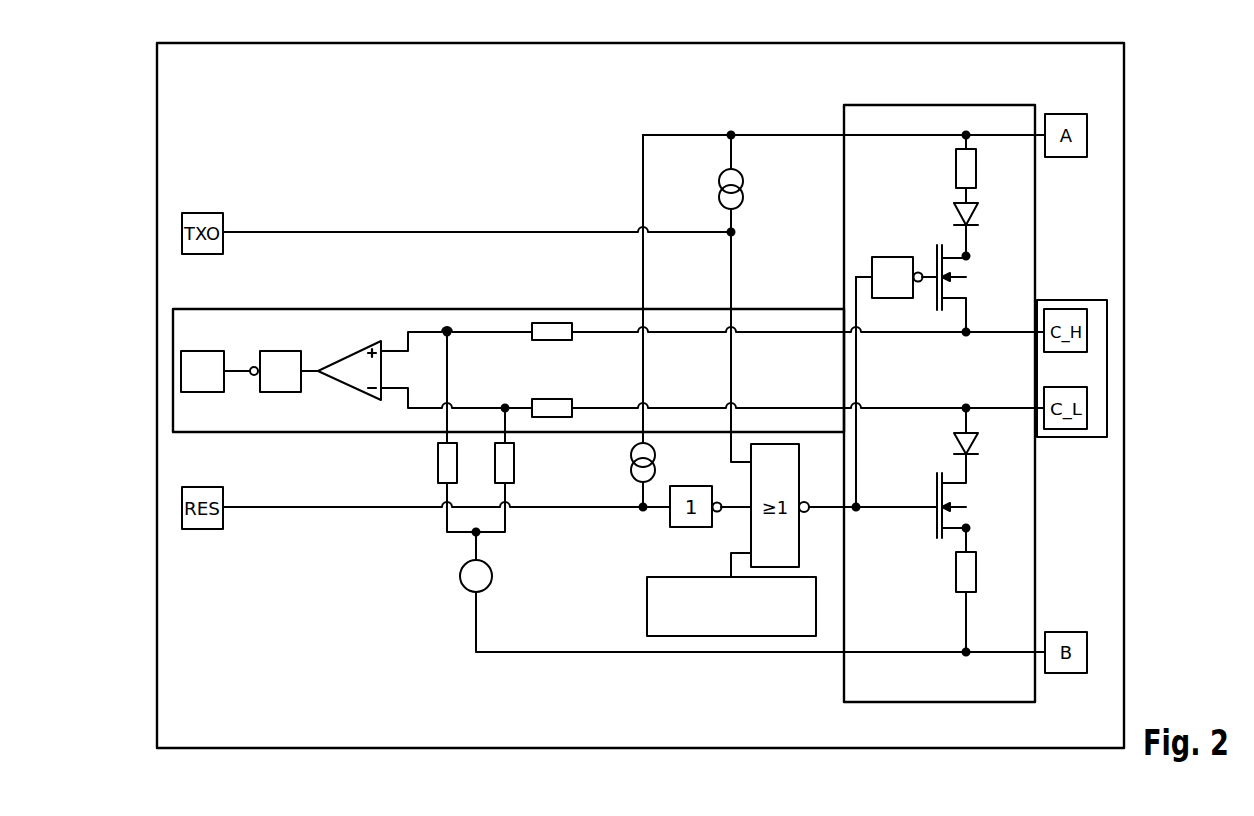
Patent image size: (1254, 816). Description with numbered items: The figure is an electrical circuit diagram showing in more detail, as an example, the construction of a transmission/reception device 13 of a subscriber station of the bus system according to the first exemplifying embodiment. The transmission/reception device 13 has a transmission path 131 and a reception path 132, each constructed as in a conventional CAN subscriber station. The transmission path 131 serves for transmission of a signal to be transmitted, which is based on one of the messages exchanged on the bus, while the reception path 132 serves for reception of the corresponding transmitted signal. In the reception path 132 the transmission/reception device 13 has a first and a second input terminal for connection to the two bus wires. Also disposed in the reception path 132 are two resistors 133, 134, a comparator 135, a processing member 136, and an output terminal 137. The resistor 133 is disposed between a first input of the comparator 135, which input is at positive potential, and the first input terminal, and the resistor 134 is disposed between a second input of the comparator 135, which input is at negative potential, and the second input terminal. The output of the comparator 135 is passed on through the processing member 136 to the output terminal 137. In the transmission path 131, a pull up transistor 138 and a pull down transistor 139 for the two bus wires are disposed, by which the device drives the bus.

The transmission/reception device 13 is at (1124, 62).
The transmission path 131 is at (938, 105).
The reception path 132 is at (172, 320).
The resistor 133 is at (552, 323).
The resistor 134 is at (552, 418).
The comparator 135 is at (345, 352).
The processing member 136 is at (281, 351).
The output terminal 137 is at (180, 371).
The pull up transistor 138 is at (935, 250).
The pull down transistor 139 is at (927, 530).